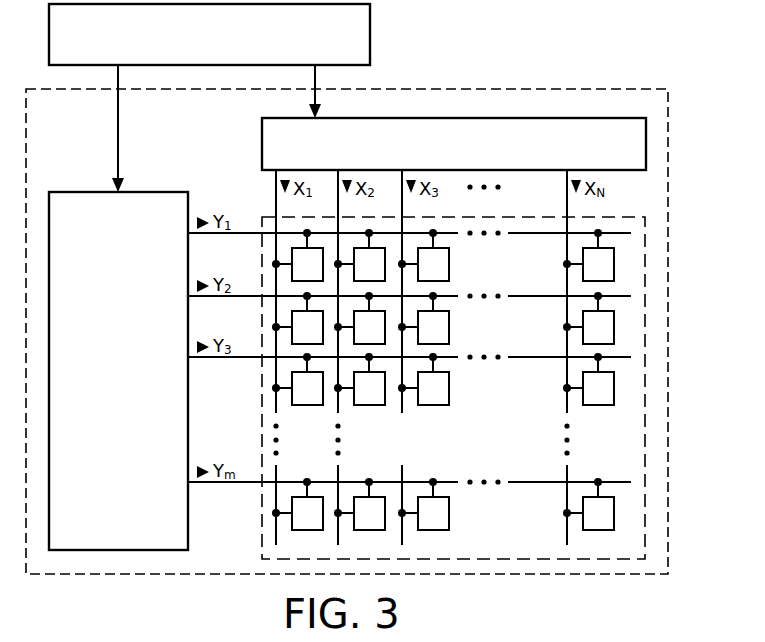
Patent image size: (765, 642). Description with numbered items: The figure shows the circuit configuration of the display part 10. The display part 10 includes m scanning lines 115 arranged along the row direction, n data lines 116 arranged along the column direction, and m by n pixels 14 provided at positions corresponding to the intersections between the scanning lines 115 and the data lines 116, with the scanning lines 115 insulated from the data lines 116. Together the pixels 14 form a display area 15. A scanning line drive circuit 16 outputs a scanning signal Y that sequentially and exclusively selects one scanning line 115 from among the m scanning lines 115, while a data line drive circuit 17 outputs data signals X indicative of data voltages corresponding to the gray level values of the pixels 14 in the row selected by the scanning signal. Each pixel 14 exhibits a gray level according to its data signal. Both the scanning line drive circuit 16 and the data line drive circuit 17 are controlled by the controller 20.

The controller 20 is at (371, 38).
The display part 10 is at (515, 89).
The data line drive circuit 17 is at (262, 143).
The scanning line drive circuit 16 is at (188, 192).
The pixel 14 is at (449, 262).
The scanning line 115 is at (534, 233).
The data line 116 is at (277, 415).
The display area 15 is at (261, 538).